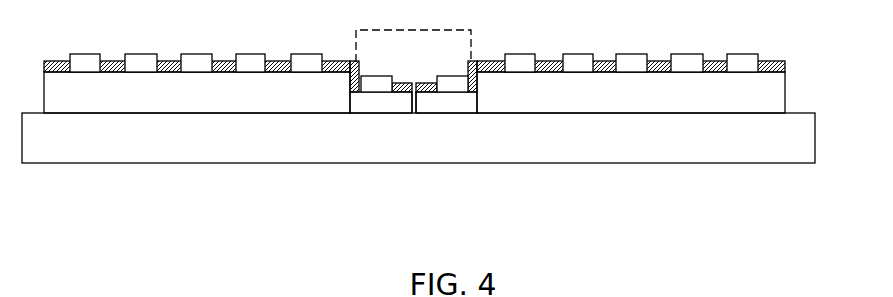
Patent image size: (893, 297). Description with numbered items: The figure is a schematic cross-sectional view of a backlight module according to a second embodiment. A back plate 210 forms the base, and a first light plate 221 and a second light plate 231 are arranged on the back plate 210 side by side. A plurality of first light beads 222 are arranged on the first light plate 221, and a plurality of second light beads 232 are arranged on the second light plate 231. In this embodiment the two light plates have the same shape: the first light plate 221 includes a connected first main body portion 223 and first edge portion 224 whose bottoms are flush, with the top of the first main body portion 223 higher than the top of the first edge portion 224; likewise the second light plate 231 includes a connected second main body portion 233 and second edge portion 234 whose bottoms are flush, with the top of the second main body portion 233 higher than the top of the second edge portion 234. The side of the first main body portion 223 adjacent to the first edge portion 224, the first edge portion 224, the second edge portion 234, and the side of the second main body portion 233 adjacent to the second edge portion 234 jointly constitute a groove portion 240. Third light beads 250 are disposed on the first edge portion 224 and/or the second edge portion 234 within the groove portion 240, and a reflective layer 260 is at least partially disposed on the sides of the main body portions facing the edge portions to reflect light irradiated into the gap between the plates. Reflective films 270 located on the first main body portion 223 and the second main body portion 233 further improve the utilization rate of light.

The back plate 210 is at (793, 141).
The first light plate 221 is at (360, 216).
The first light beads 222 is at (192, 62).
The first main body portion 223 is at (197, 108).
The first edge portion 224 is at (367, 107).
The second light plate 231 is at (460, 216).
The second light beads 232 is at (683, 61).
The second main body portion 233 is at (648, 100).
The second edge portion 234 is at (443, 105).
The groove portion 240 is at (443, 30).
The third light bead 250 is at (378, 82).
The reflective layer 260 is at (399, 93).
The reflective films 270 is at (114, 60).